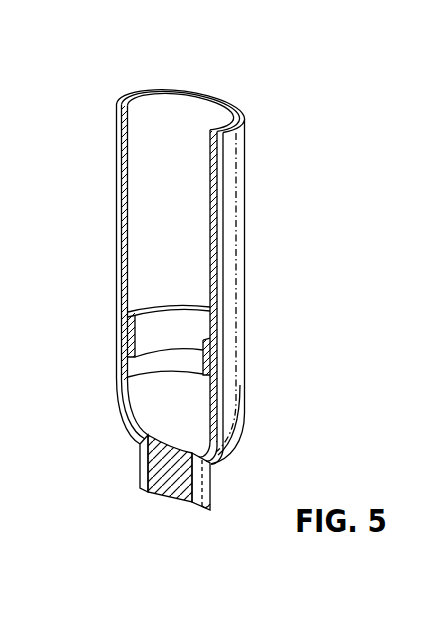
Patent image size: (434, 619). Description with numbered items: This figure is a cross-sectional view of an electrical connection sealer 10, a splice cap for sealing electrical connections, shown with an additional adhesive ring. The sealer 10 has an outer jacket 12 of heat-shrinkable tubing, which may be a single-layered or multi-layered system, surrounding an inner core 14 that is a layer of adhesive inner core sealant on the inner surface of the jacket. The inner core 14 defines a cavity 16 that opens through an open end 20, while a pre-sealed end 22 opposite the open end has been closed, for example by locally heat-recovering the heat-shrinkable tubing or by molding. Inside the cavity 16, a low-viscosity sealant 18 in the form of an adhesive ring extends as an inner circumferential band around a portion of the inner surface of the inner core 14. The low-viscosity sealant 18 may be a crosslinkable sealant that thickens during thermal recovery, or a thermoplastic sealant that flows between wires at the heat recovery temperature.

The electrical connection sealer 10 is at (274, 61).
The outer jacket 12 is at (116, 197).
The inner core 14 is at (143, 95).
The cavity 16 is at (184, 104).
The low-viscosity sealant 18 is at (152, 318).
The open end 20 is at (242, 122).
The pre-sealed end 22 is at (143, 493).